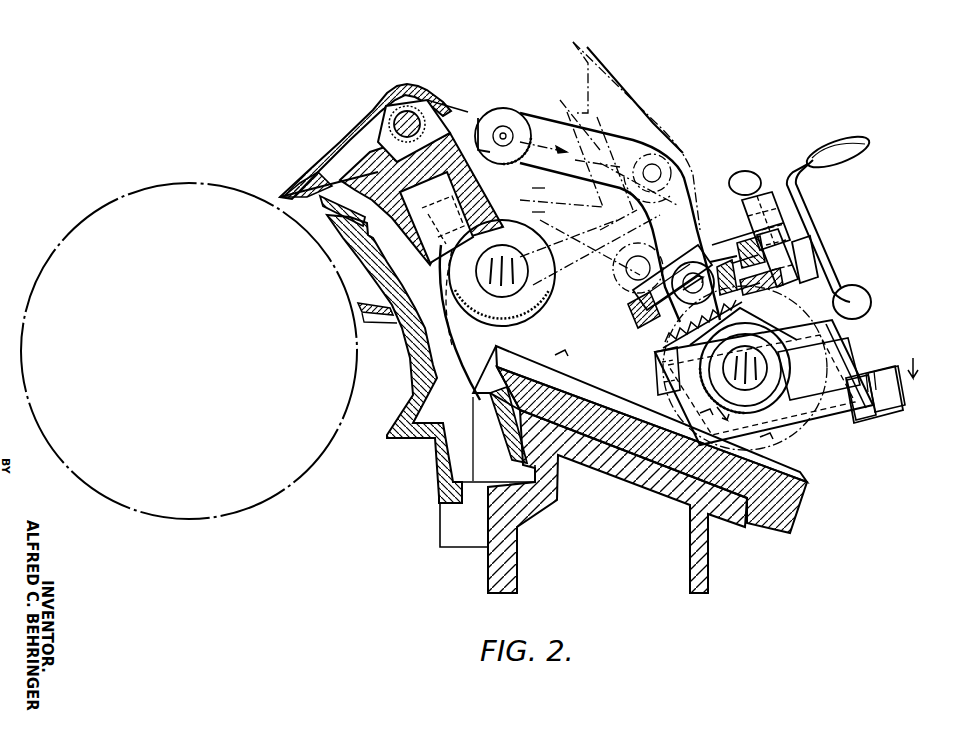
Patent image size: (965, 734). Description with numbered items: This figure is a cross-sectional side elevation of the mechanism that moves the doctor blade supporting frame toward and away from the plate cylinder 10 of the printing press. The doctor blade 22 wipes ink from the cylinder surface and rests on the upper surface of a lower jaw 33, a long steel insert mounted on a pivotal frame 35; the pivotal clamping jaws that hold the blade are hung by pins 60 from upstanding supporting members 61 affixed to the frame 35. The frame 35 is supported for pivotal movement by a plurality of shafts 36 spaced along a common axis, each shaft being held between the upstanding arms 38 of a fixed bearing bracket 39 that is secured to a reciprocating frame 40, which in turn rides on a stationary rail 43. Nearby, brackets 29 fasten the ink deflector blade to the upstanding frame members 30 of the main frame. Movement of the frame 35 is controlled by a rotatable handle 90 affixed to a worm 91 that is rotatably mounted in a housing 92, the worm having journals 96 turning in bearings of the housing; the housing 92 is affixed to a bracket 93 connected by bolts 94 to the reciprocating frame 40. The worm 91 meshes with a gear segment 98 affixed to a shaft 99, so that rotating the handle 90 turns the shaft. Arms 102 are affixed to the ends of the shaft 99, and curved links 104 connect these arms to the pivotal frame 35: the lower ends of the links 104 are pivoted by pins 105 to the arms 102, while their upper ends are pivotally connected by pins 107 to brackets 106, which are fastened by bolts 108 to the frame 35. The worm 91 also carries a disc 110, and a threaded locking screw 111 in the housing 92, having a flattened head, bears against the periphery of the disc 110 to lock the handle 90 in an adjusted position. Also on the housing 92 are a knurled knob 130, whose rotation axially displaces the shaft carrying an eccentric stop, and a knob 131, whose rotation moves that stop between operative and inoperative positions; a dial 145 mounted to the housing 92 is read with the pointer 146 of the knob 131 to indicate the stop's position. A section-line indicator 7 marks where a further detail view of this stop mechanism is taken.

The plate cylinder 10 is at (257, 493).
The doctor blade 22 is at (283, 197).
The brackets 29 is at (381, 328).
The upstanding frame members 30 is at (367, 262).
The lower clamping jaw 33 is at (318, 176).
The pivotal frame 35 is at (462, 127).
The shafts 36 is at (517, 281).
The upstanding arms 38 is at (528, 342).
The fixed bearing bracket 39 is at (585, 383).
The reciprocating frame 40 is at (790, 490).
The stationary rail 43 is at (637, 477).
The pins 60 is at (409, 110).
The upstanding supporting members 61 is at (446, 110).
The rotatable handle 90 is at (834, 140).
The worm 91 is at (725, 262).
The housing 92 is at (763, 190).
The bracket 93 is at (787, 458).
The bolts 94 is at (660, 395).
The journals 96 is at (633, 298).
The gear segment 98 is at (750, 305).
The shaft 99 is at (758, 357).
The arms 102 is at (654, 340).
The curved links 104 is at (543, 117).
The pins 105 is at (689, 268).
The brackets 106 is at (557, 188).
The pins 107 is at (505, 133).
The bolts 108 is at (557, 212).
The disc 110 is at (778, 258).
The threaded locking screw 111 is at (743, 171).
The knurled knob 130 is at (887, 373).
The knob 131 is at (866, 427).
The dial 145 is at (837, 338).
The pointer 146 is at (884, 408).
The section arrow 7 is at (920, 367).